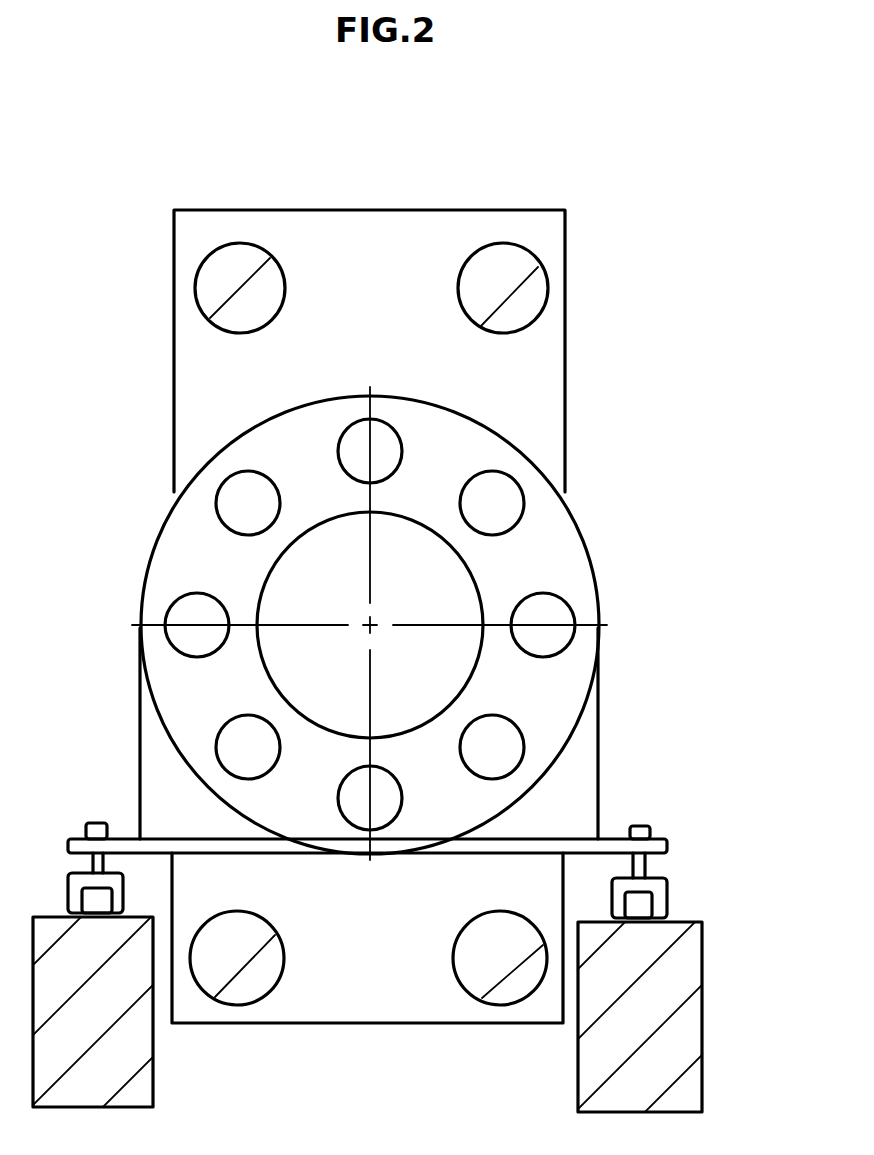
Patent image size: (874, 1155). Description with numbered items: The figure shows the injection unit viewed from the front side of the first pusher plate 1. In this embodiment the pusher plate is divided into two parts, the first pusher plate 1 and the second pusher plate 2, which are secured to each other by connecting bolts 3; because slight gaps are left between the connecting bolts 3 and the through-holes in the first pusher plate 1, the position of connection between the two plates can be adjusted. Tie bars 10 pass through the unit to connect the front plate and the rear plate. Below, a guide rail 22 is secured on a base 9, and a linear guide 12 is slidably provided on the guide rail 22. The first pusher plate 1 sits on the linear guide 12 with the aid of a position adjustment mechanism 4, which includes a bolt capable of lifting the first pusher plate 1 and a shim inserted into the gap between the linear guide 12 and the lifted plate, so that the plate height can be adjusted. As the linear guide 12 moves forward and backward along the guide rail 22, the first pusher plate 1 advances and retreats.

The first pusher plate 1 is at (152, 540).
The second pusher plate 2 is at (567, 362).
The connecting bolts 3 is at (528, 493).
The position adjustment mechanism 4 is at (637, 825).
The base 9 is at (700, 998).
The tie bars 10 is at (227, 243).
The linear guide 12 is at (668, 878).
The guide rail 22 is at (635, 912).